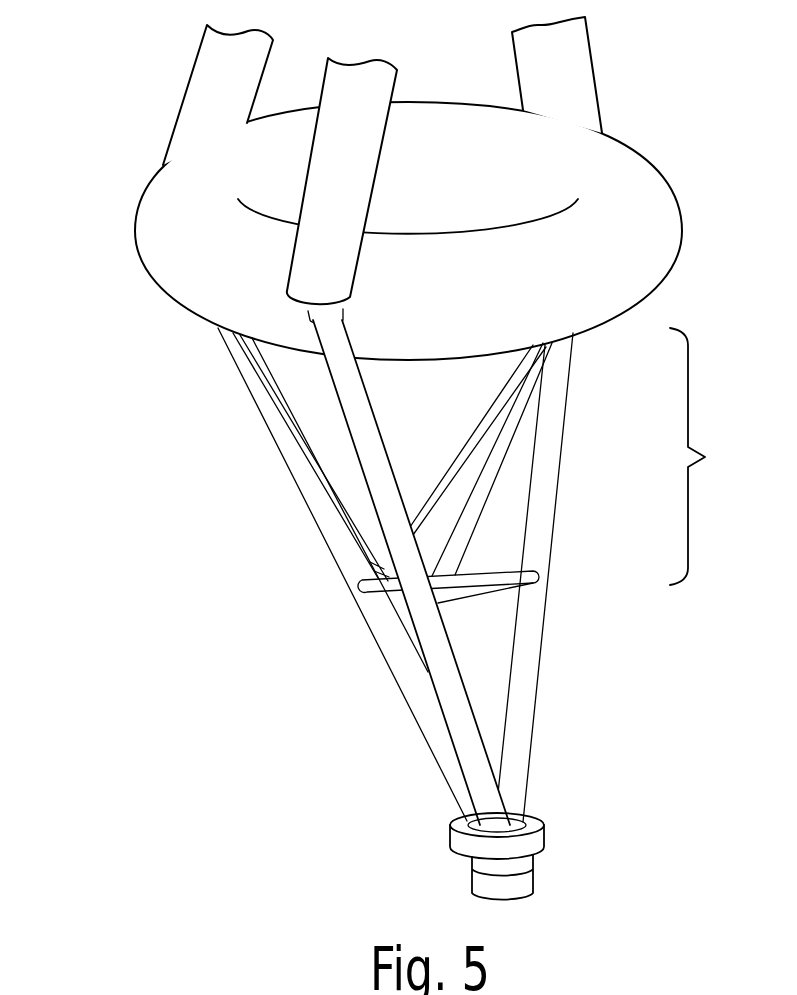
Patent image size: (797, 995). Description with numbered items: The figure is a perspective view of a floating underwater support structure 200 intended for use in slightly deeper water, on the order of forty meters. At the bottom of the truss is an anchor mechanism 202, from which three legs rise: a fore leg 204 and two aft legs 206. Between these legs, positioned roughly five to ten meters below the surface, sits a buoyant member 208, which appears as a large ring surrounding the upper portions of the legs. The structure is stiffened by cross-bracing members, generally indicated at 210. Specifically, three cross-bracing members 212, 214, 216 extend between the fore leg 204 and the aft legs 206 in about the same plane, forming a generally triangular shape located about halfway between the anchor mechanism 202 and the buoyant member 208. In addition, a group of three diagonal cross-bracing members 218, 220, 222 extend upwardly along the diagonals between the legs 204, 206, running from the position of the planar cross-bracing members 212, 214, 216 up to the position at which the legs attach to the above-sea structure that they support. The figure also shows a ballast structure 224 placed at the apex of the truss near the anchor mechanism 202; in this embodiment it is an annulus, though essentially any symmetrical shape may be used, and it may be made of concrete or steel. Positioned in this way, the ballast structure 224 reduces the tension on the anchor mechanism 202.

The floating underwater support structure 200 is at (103, 547).
The anchor mechanism 202 is at (527, 882).
The fore leg 204 is at (555, 445).
The aft legs 206 is at (330, 487).
The buoyant member 208 is at (163, 279).
The cross-bracing members 210 is at (716, 456).
The cross-bracing member 212 is at (467, 597).
The cross-bracing member 214 is at (482, 578).
The cross-bracing member 216 is at (382, 592).
The diagonal cross-bracing member 218 is at (481, 478).
The diagonal cross-bracing member 220 is at (307, 435).
The diagonal cross-bracing member 222 is at (452, 448).
The ballast structure 224 is at (543, 835).